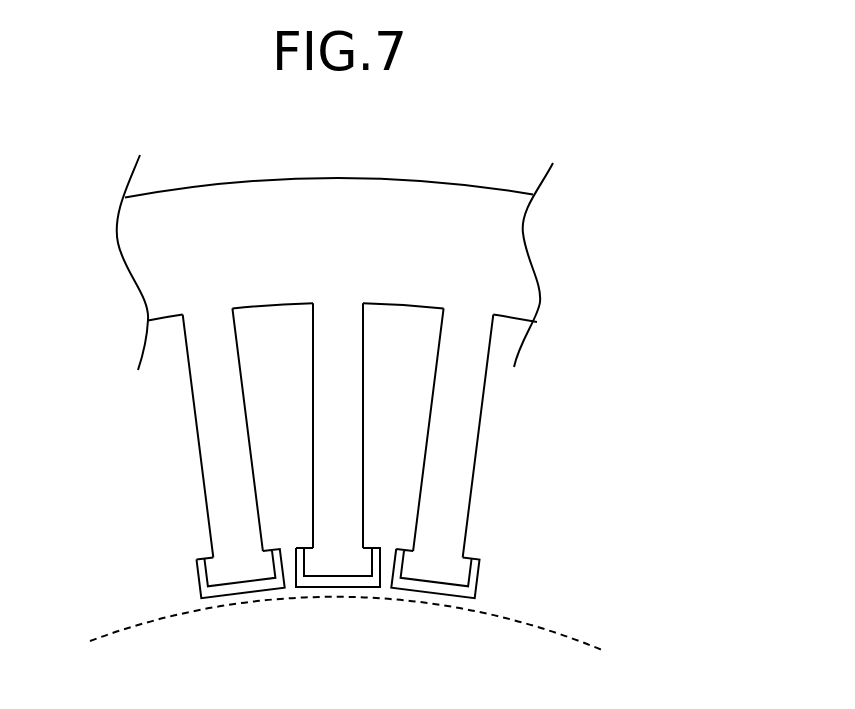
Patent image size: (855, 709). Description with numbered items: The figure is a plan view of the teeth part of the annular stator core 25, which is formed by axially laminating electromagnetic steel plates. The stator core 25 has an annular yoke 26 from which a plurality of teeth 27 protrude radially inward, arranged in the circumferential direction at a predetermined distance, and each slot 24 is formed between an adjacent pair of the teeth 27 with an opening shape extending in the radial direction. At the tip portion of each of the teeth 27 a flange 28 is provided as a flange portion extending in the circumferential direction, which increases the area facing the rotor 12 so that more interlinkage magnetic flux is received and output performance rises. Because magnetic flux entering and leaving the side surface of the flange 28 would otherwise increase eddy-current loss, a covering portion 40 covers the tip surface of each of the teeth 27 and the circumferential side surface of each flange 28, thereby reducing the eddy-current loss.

The rotor 12 is at (527, 623).
The slot 24 is at (403, 320).
The stator core 25 is at (435, 178).
The yoke 26 is at (502, 263).
The tooth 27 is at (364, 472).
The flange 28 is at (303, 562).
The covering portion 40 is at (332, 588).